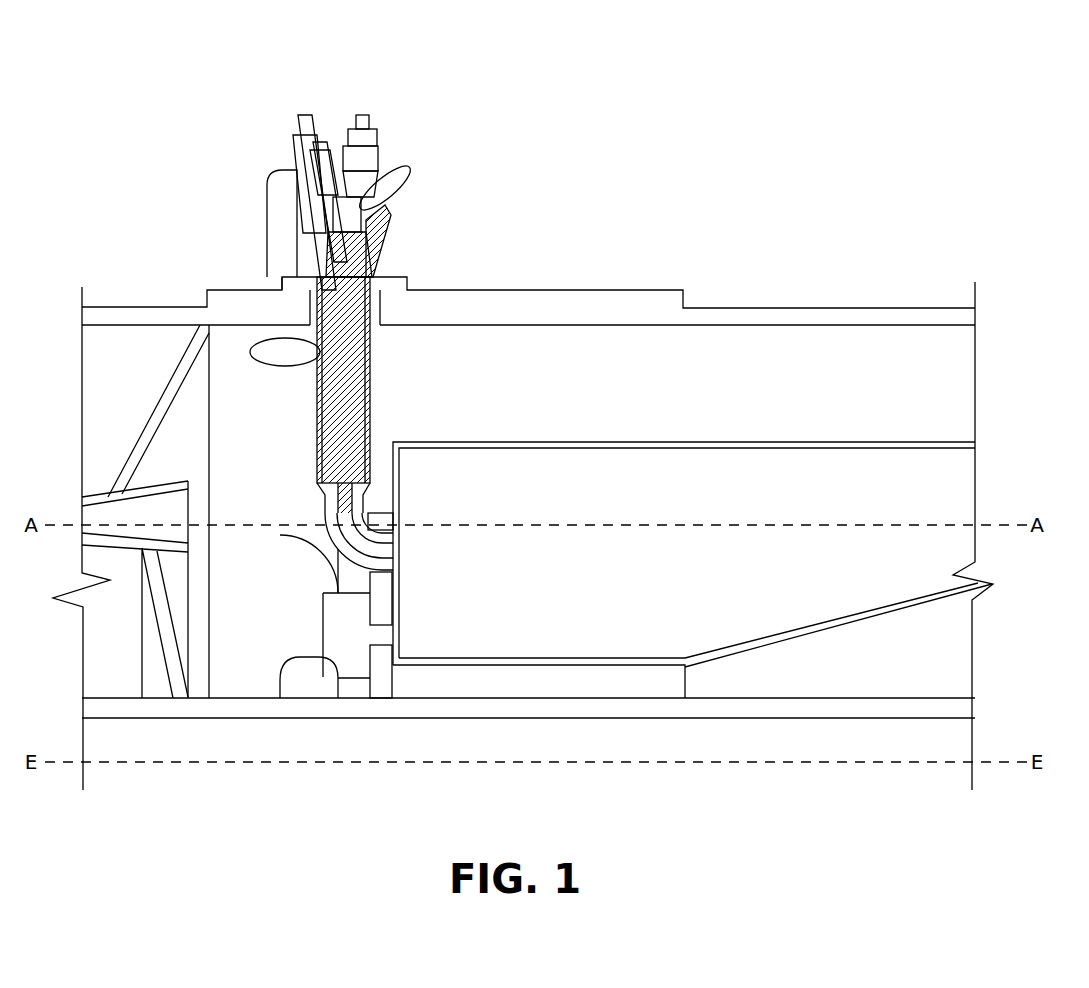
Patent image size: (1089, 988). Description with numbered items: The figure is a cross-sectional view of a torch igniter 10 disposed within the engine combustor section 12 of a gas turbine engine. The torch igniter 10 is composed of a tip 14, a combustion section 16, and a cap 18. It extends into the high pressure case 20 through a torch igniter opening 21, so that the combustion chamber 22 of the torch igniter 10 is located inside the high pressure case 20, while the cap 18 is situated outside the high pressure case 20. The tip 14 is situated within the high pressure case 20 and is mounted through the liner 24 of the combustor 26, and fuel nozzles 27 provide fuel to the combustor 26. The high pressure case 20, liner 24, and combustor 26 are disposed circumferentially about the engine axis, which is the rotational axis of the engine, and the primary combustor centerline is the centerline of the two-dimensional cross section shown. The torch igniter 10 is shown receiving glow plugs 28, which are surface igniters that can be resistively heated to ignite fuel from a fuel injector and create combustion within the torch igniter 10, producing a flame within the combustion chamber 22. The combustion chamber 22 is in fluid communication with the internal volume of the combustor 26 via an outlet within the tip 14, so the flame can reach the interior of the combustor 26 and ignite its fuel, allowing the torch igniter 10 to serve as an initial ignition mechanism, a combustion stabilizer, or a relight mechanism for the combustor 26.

The torch igniter 10 is at (510, 173).
The engine combustor section 12 is at (163, 258).
The tip 14 is at (325, 557).
The combustion section 16 is at (398, 398).
The cap 18 is at (410, 224).
The high pressure case 20 is at (638, 290).
The torch igniter opening 21 is at (316, 362).
The combustion chamber 22 is at (303, 299).
The liner 24 is at (835, 437).
The combustor 26 is at (624, 474).
The fuel nozzles 27 is at (288, 489).
The glow plugs 28 is at (302, 115).